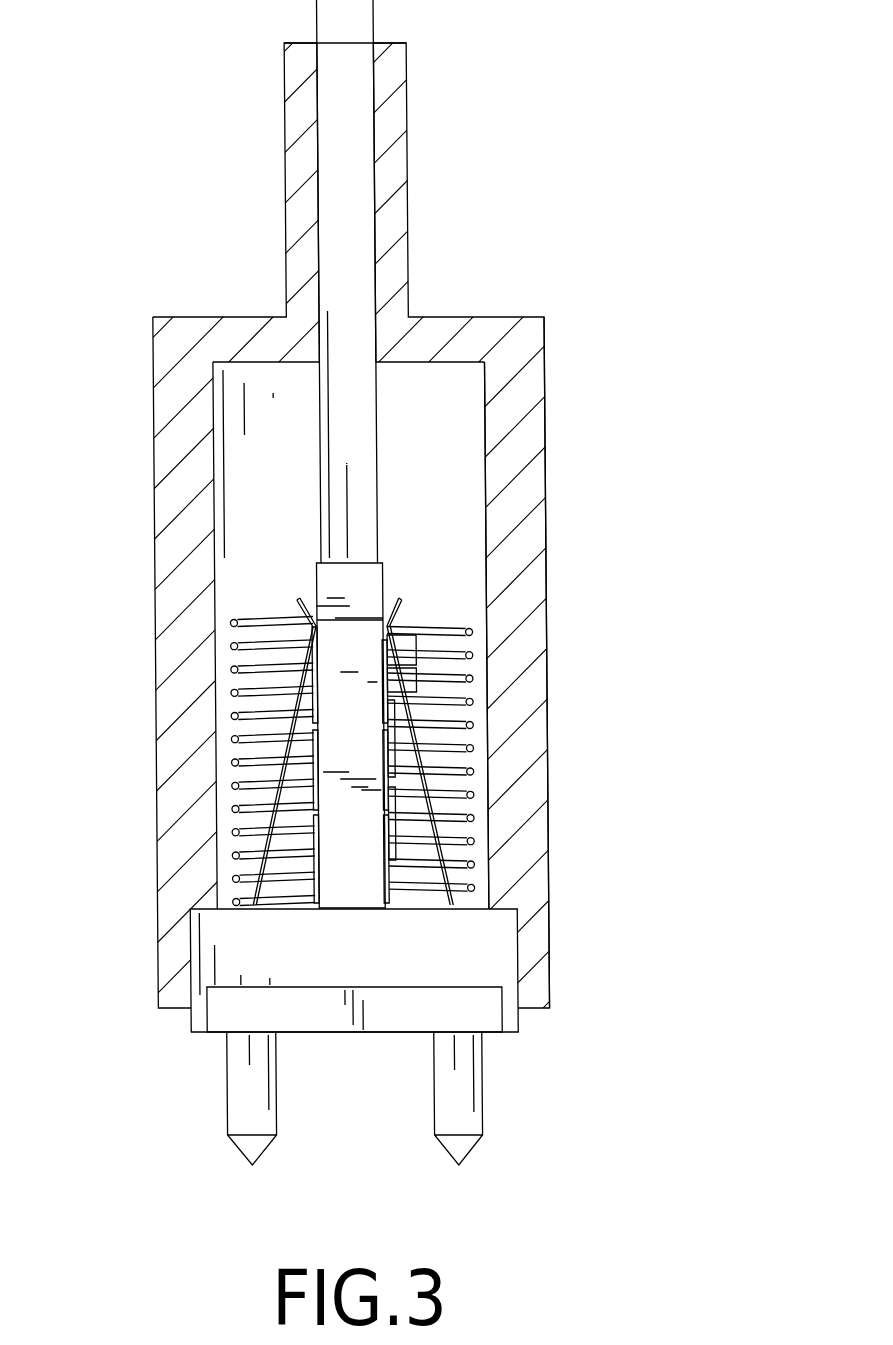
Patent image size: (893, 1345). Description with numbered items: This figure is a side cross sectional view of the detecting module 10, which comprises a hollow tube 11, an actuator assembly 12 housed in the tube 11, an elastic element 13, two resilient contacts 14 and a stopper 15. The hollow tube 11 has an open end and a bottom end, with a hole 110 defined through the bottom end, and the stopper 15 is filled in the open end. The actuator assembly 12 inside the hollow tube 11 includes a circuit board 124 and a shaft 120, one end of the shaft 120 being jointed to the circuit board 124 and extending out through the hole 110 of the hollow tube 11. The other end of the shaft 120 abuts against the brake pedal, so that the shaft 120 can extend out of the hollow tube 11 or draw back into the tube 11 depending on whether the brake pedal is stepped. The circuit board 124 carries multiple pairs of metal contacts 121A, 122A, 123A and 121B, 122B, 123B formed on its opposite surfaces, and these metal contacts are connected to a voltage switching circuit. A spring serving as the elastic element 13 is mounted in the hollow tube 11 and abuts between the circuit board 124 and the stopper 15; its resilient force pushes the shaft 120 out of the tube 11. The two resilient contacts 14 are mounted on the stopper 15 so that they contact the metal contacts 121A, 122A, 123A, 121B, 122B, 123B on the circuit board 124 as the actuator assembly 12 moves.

The detecting module 10 is at (545, 368).
The hollow tube 11 is at (533, 465).
The actuator assembly 12 is at (259, 559).
The elastic element 13 is at (447, 627).
The resilient contacts 14 is at (308, 620).
The stopper 15 is at (500, 1015).
The hole 110 is at (369, 339).
The shaft 120 is at (353, 143).
The circuit board 124 is at (368, 585).
The metal contact 121A is at (389, 698).
The metal contact 121B is at (304, 683).
The metal contact 122A is at (391, 760).
The metal contact 122B is at (307, 767).
The metal contact 123A is at (392, 835).
The metal contact 123B is at (306, 865).